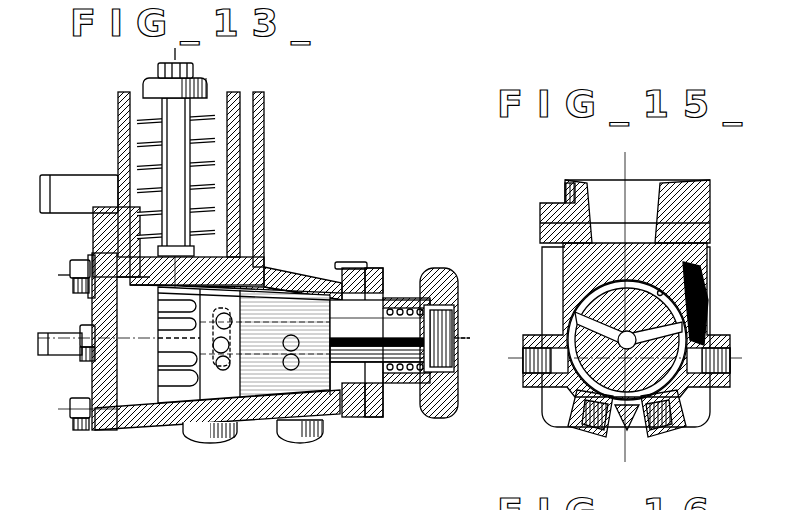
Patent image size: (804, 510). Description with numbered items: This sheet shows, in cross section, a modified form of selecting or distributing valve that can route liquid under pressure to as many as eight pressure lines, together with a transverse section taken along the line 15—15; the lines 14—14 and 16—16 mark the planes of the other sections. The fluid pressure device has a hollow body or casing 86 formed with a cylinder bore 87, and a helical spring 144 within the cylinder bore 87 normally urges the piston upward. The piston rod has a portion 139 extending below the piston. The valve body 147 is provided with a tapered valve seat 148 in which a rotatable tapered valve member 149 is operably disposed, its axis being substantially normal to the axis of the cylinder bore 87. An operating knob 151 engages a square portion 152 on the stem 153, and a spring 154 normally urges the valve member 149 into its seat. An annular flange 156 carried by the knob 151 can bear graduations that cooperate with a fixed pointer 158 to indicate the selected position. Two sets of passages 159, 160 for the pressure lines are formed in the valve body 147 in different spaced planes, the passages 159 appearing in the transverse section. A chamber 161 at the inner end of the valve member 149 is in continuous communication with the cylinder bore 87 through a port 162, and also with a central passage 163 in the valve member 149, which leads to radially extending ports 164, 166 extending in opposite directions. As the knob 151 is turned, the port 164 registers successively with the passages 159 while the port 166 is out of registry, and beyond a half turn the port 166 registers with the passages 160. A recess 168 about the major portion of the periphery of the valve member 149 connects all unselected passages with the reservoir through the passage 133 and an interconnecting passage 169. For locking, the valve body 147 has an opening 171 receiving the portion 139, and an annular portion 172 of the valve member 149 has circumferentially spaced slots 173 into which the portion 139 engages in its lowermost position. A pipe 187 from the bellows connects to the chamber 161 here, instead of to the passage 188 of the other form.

In FIG. 13, the section line 14— 14 is at (187, 237).
In FIG. 13, the section line 15— 15 is at (208, 340).
In FIG. 13, the section line 16— 16 is at (301, 361).
In FIG. 13, the hollow body or casing 86 is at (121, 114).
In FIG. 15, the hollow body or casing 86 is at (672, 183).
In FIG. 13, the cylinder bore 87 is at (133, 134).
In FIG. 15, the cylinder bore 87 is at (648, 186).
In FIG. 13, the passage 133 is at (247, 141).
In FIG. 13, the portion of piston rod 139 is at (118, 150).
In FIG. 13, the helical spring 144 is at (127, 170).
In FIG. 13, the valve body 147 is at (310, 285).
In FIG. 15, the valve body 147 is at (663, 262).
In FIG. 13, the tapered valve seat 148 is at (257, 396).
In FIG. 15, the tapered valve seat 148 is at (702, 277).
In FIG. 13, the rotatable tapered valve member 149 is at (350, 396).
In FIG. 15, the rotatable tapered valve member 149 is at (668, 309).
In FIG. 13, the operating knob 151 is at (432, 268).
In FIG. 13, the square portion 152 is at (372, 325).
In FIG. 13, the stem 153 is at (440, 327).
In FIG. 13, the spring 154 is at (406, 367).
In FIG. 13, the annular flange 156 is at (362, 282).
In FIG. 13, the fixed pointer 158 is at (343, 264).
In FIG. 13, the passages 159 is at (196, 438).
In FIG. 15, the passages 159 is at (563, 368).
In FIG. 13, the passages 160 is at (326, 433).
In FIG. 13, the chamber 161 is at (133, 403).
In FIG. 13, the port 162 is at (95, 342).
In FIG. 13, the central passage 163 is at (193, 345).
In FIG. 15, the central passage 163 is at (637, 337).
In FIG. 13, the radially extending port 164 is at (172, 318).
In FIG. 15, the radially extending port 164 is at (580, 322).
In FIG. 13, the radially extending port 166 is at (290, 334).
In FIG. 13, the recess or port 168 is at (270, 293).
In FIG. 15, the recess or port 168 is at (662, 293).
In FIG. 13, the interconnecting passage 169 is at (226, 177).
In FIG. 13, the opening 171 is at (229, 159).
In FIG. 13, the annular portion 172 is at (165, 360).
In FIG. 13, the circumferentially spaced slots 173 is at (165, 304).
In FIG. 13, the pipe 187 is at (62, 329).
In FIG. 13, the passage 188 is at (118, 331).